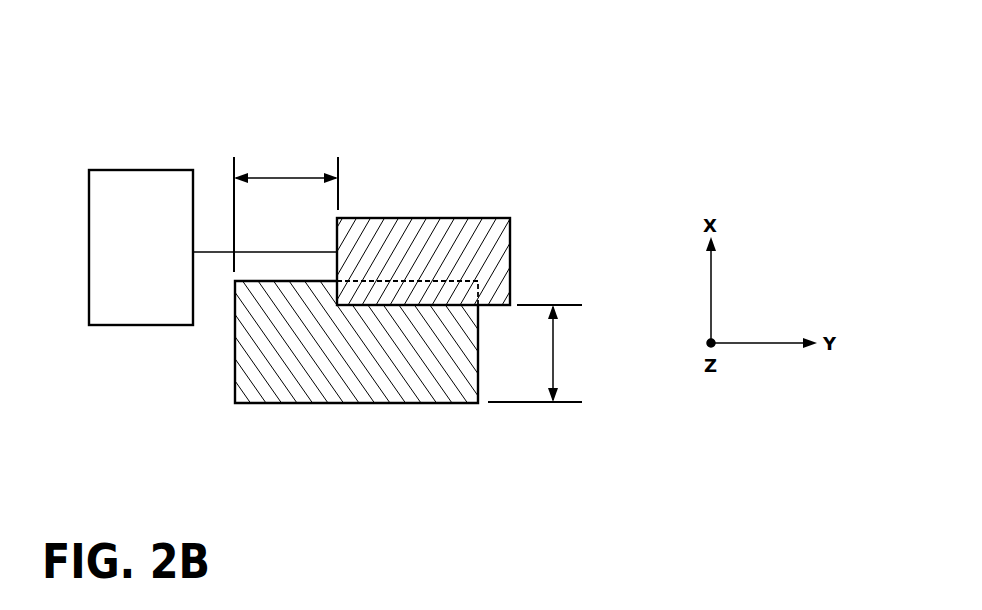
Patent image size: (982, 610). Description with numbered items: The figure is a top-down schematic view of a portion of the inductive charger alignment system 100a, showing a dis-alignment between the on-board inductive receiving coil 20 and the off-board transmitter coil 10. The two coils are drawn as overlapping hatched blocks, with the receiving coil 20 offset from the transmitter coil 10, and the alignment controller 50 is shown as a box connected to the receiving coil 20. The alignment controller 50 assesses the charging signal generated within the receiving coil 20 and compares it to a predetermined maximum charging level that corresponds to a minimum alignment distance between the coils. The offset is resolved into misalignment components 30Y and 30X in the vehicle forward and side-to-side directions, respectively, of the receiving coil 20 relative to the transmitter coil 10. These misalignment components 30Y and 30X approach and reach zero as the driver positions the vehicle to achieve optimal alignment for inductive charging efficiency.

The off-board transmitter coil 10 is at (235, 368).
The on-board inductive receiving coil 20 is at (433, 218).
The alignment controller 50 is at (140, 257).
The misalignment component in the vehicle forward direction 30Y is at (286, 209).
The misalignment component in the vehicle side-to-side direction 30X is at (542, 353).
The inductive charger alignment system 100a is at (601, 118).